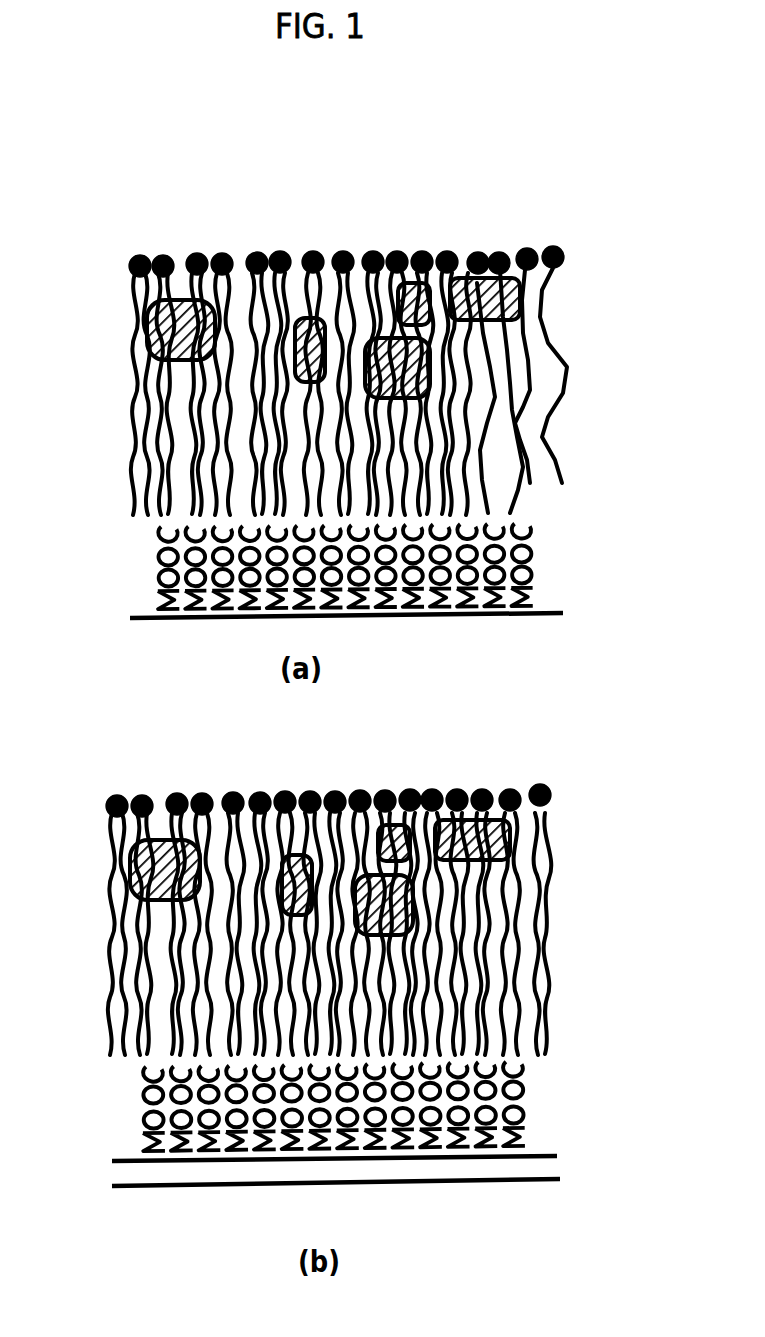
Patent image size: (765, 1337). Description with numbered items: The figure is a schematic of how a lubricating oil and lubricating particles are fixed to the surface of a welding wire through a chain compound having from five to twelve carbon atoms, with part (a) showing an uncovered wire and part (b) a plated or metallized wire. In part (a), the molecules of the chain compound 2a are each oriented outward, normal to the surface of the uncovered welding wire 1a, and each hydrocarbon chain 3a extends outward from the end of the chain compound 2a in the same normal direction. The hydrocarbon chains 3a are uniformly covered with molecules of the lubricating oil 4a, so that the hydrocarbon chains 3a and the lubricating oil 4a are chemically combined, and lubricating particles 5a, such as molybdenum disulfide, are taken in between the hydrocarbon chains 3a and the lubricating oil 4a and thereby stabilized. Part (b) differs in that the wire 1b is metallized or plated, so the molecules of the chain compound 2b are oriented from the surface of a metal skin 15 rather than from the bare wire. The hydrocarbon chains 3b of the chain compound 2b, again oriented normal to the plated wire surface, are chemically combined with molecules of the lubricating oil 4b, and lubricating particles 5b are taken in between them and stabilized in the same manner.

The substrate 1a is at (545, 617).
The chain compound 2a is at (566, 563).
The hydrocarbon chain 3a is at (513, 476).
The lubricating oil 4a is at (562, 262).
The lubricating particles 5a is at (152, 333).
The substrate 1b is at (492, 1158).
The chain compound 2b is at (557, 1095).
The hydrocarbon chains 3b is at (515, 955).
The lubricating oil 4b is at (549, 801).
The lubricating particles 5b is at (128, 873).
The metal skin 15 is at (542, 1165).